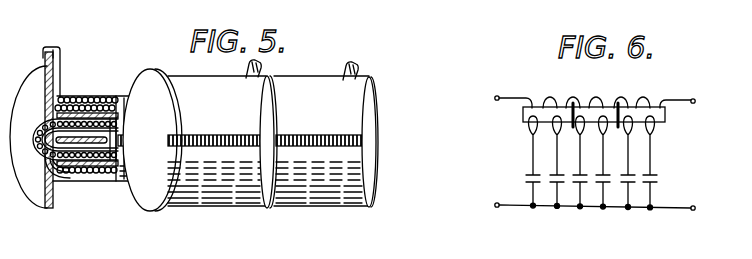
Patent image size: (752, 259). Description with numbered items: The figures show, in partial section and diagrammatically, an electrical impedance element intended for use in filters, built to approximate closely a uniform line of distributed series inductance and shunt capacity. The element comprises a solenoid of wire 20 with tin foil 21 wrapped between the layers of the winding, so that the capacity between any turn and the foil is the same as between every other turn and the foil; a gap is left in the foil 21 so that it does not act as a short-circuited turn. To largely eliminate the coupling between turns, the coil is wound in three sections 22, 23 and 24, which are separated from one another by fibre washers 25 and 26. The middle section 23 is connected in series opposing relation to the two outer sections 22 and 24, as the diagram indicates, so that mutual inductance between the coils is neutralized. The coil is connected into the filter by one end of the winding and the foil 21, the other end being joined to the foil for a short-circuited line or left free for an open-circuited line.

In FIG. 5, the wire 20 is at (62, 97).
In FIG. 6, the wire 20 is at (519, 97).
In FIG. 5, the tin foil 21 is at (47, 51).
In FIG. 6, the tin foil 21 is at (675, 211).
In FIG. 5, the coil section 22 is at (108, 183).
In FIG. 6, the coil section 22 is at (540, 102).
In FIG. 5, the middle coil section 23 is at (210, 191).
In FIG. 6, the middle coil section 23 is at (585, 103).
In FIG. 5, the coil section 24 is at (312, 194).
In FIG. 6, the coil section 24 is at (631, 103).
In FIG. 5, the fibre washer 25 is at (146, 73).
In FIG. 5, the fibre washer 26 is at (265, 86).